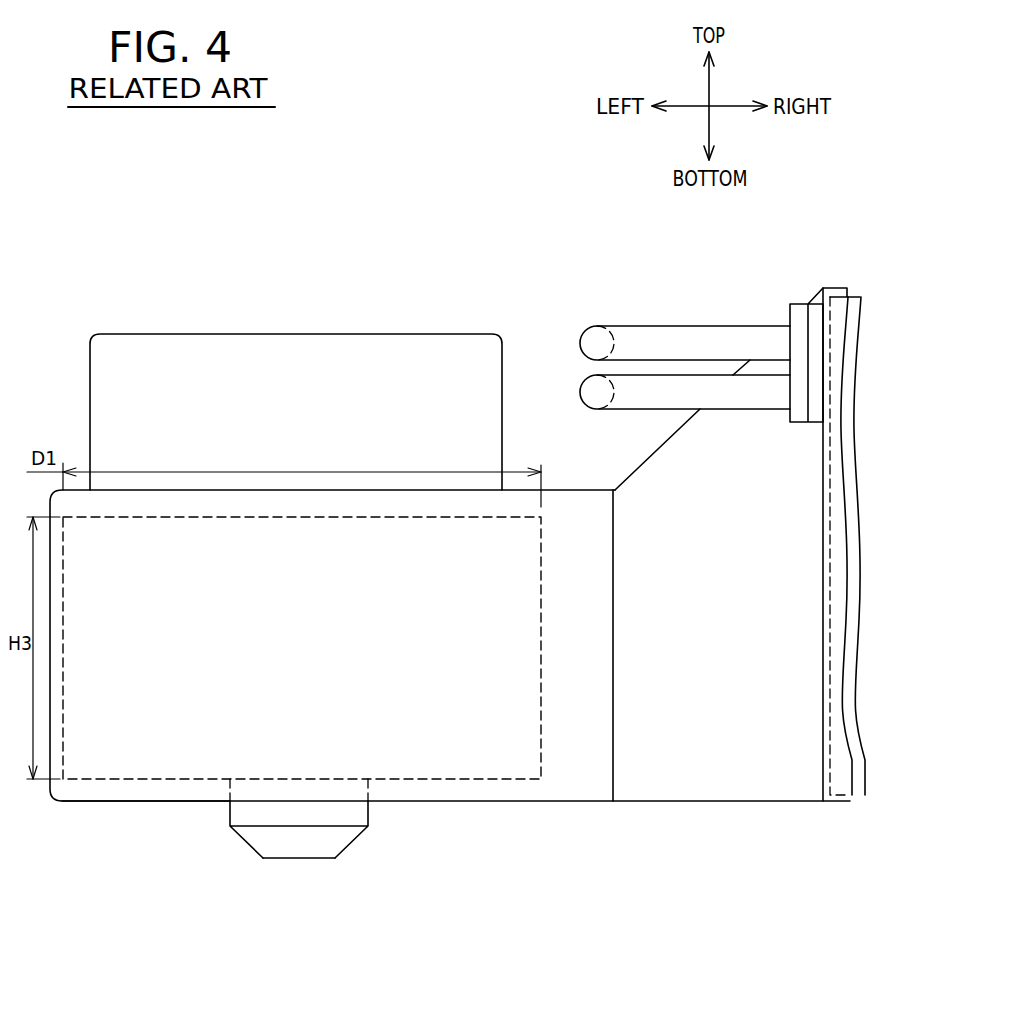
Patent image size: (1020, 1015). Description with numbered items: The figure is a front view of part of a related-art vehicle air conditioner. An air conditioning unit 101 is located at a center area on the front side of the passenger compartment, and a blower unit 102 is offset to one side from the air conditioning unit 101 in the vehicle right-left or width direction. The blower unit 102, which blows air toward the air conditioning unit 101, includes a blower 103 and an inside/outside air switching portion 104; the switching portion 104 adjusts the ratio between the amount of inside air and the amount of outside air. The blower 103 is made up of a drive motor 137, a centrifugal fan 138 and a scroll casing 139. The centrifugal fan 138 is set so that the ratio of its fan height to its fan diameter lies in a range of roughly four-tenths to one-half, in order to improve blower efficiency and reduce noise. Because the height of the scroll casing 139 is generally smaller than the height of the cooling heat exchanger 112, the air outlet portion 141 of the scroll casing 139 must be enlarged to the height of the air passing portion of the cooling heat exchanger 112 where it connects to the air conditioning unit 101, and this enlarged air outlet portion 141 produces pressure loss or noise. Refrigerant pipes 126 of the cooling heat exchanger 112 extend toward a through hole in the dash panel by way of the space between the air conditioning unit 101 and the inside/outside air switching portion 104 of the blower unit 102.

The air conditioning unit 101 is at (821, 243).
The blower unit 102 is at (477, 256).
The blower 103 is at (224, 868).
The inside/outside air switching portion 104 is at (292, 324).
The cooling heat exchanger 112 is at (851, 343).
The refrigerant pipes 126 is at (592, 398).
The drive motor 137 is at (302, 858).
The centrifugal fan 138 is at (420, 780).
The scroll casing 139 is at (127, 803).
The air outlet portion 141 is at (723, 587).